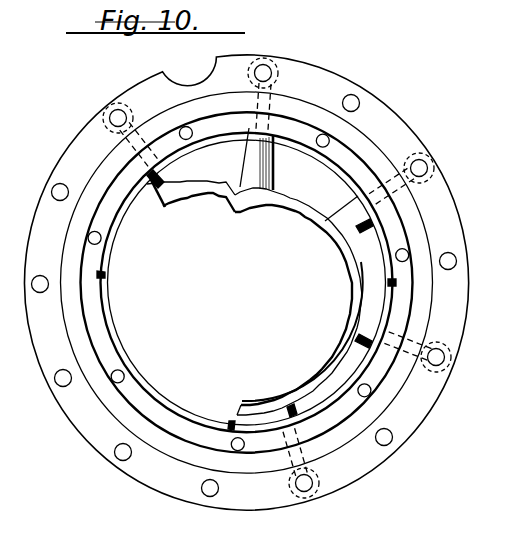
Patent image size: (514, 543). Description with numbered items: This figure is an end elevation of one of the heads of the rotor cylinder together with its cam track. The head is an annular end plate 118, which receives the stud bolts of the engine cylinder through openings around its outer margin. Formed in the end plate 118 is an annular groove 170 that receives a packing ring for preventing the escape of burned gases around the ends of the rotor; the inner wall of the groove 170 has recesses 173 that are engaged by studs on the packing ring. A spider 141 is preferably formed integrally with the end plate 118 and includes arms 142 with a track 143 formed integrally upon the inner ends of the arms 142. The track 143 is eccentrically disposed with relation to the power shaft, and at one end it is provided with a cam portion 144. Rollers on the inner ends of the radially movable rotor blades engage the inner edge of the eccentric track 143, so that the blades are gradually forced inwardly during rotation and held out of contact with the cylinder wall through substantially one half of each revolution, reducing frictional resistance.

The annular end plate 118 is at (396, 122).
The annular groove 170 is at (434, 216).
The recess 173 is at (104, 276).
The arm 142 is at (353, 197).
The cam portion 144 is at (193, 193).
The track 143 is at (267, 203).
The spider 141 is at (322, 237).